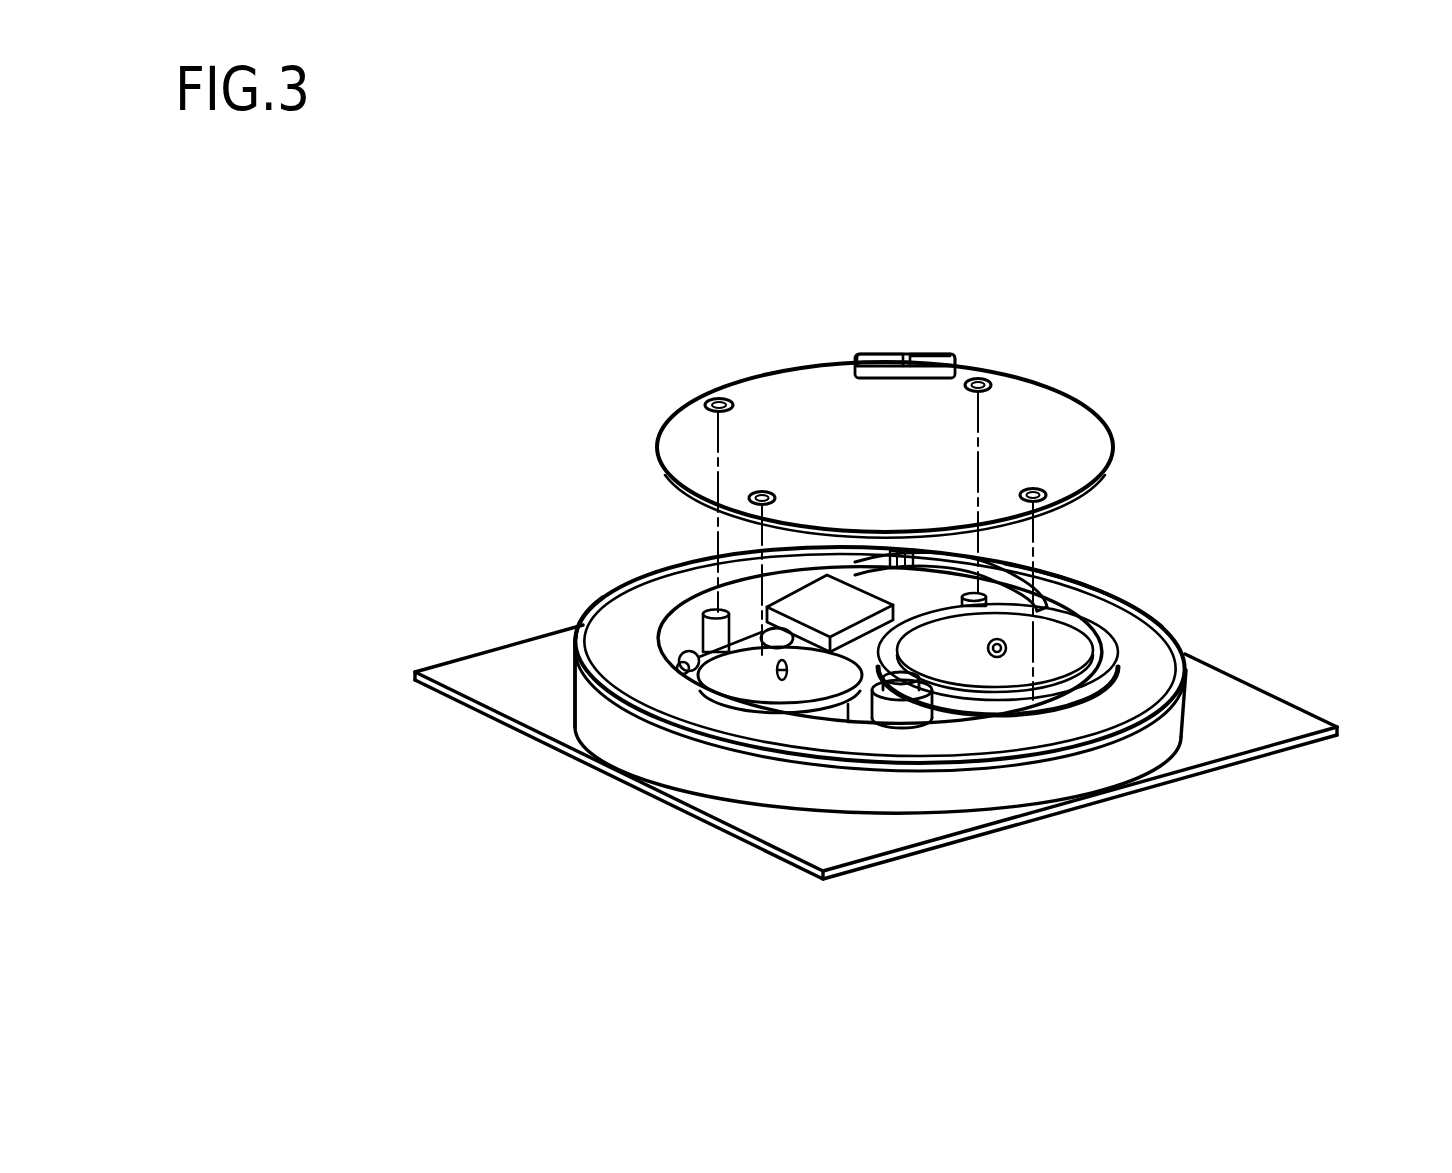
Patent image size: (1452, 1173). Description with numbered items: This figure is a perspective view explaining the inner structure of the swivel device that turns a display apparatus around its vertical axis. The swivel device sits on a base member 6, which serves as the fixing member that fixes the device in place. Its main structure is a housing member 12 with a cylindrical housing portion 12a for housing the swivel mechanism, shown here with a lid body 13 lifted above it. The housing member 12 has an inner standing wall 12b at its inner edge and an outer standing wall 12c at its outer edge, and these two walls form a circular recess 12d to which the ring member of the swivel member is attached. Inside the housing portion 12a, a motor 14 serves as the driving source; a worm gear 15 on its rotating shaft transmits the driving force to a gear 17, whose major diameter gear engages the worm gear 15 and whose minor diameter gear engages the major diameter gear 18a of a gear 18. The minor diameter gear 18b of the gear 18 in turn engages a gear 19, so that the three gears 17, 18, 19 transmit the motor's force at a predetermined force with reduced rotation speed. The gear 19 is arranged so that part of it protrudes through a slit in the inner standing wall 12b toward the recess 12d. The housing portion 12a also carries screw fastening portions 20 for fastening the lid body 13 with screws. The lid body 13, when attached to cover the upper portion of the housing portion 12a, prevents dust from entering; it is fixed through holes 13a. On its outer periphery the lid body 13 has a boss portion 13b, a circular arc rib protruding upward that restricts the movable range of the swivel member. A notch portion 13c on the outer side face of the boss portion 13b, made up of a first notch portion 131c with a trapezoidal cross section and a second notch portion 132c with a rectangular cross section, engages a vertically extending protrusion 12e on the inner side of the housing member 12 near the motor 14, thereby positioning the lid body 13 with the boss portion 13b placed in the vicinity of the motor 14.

The base member 6 is at (1293, 720).
The housing member 12 is at (1100, 760).
The housing portion 12a is at (590, 603).
The inner standing wall 12b is at (952, 745).
The outer standing wall 12c is at (1140, 597).
The recess 12d is at (1143, 690).
The protrusion 12e is at (965, 550).
The lid body 13 is at (1057, 413).
The holes 13a is at (724, 397).
The boss portion 13b is at (940, 357).
The notch portion 13c is at (803, 232).
The first notch portion 131c is at (903, 357).
The second notch portion 132c is at (907, 360).
The motor 14 is at (820, 597).
The worm gear 15 is at (690, 660).
The gear 17 is at (745, 690).
The gear 18 is at (804, 828).
The major diameter gear 18a is at (855, 714).
The minor diameter gear 18b is at (897, 712).
The gear 19 is at (1077, 650).
The screw fastening portions 20 is at (667, 630).